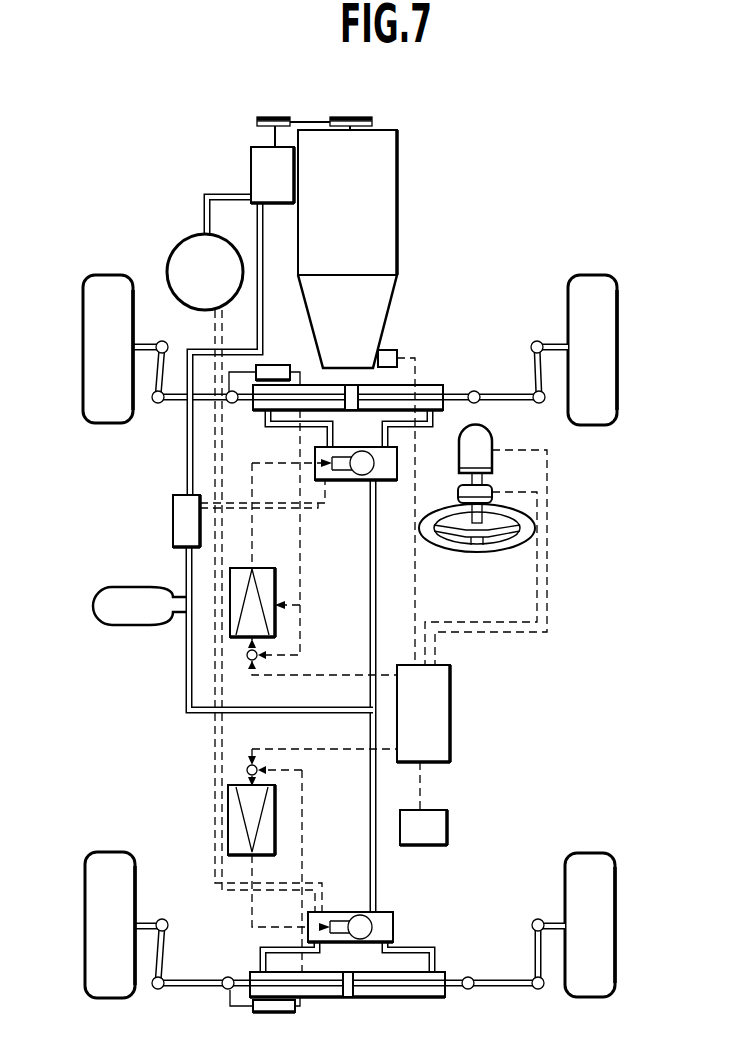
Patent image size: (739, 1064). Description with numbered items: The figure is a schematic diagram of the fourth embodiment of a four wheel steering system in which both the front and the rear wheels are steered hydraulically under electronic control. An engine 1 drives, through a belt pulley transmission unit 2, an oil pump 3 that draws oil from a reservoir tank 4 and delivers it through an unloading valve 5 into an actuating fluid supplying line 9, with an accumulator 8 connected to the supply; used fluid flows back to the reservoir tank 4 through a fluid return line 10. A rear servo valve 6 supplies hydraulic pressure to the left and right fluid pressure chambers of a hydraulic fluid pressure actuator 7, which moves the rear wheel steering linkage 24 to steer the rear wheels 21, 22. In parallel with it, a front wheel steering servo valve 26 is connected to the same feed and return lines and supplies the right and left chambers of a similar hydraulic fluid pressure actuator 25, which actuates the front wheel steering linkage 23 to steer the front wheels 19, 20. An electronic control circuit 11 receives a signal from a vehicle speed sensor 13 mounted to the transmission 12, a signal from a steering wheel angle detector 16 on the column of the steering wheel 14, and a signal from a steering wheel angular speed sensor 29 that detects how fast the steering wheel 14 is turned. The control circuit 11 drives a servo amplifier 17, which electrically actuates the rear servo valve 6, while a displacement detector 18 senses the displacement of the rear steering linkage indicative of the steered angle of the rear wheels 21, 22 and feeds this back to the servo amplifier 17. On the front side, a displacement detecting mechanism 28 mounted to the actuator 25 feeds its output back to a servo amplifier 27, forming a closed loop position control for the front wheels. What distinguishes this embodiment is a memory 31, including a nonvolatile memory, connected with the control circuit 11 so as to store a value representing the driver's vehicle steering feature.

The engine 1 is at (397, 201).
The belt pulley transmission unit 2 is at (311, 122).
The oil pump 3 is at (251, 168).
The reservoir tank 4 is at (180, 247).
The unloading valve 5 is at (173, 521).
The servo valve 6 is at (393, 923).
The hydraulic fluid pressure actuator 7 is at (403, 997).
The accumulator 8 is at (128, 587).
The actuating fluid supplying line 9 is at (186, 672).
The fluid return line 10 is at (215, 734).
The electronic control circuit 11 is at (450, 683).
The transmission 12 is at (391, 300).
The vehicle speed sensor 13 is at (393, 345).
The steering wheel 14 is at (483, 557).
The steering wheel angle detector 16 is at (492, 465).
The servo amplifier 17 is at (228, 823).
The displacement detector 18 is at (283, 1012).
The front wheel 19 is at (617, 307).
The front wheel 20 is at (83, 320).
The rear wheel 21 is at (615, 876).
The rear wheel 22 is at (85, 882).
The front wheel steering linkage 23 is at (542, 380).
The rear wheel steering linkage 24 is at (536, 946).
The hydraulic fluid pressure actuator 25 is at (436, 385).
The front wheel steering servo valve 26 is at (345, 483).
The servo amplifier 27 is at (265, 568).
The displacement detecting mechanism 28 is at (280, 365).
The steering wheel angular speed sensor 29 is at (458, 494).
The memory 31 is at (448, 820).